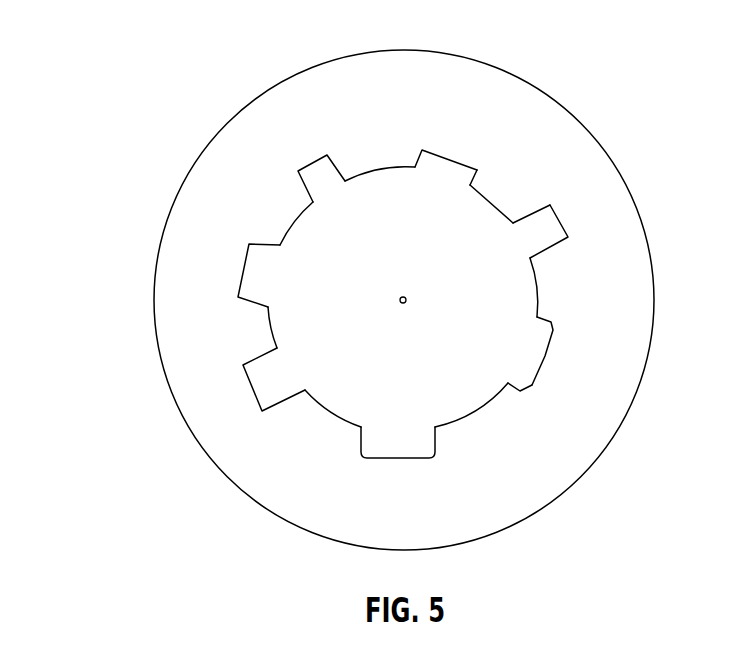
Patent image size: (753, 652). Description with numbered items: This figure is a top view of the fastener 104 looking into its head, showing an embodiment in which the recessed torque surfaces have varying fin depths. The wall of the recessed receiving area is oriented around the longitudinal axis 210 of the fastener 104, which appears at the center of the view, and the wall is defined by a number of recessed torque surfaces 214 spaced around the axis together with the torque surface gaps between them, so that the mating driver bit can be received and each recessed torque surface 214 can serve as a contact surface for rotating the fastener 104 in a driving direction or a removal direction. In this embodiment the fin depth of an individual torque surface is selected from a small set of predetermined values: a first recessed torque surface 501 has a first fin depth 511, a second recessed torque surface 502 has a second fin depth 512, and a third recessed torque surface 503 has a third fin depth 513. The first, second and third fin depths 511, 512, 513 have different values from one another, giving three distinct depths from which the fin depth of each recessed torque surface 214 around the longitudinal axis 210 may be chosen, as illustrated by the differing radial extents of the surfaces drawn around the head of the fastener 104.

The fastener 104 is at (131, 65).
The longitudinal axis 210 is at (399, 297).
The recessed torque surface 214 is at (313, 175).
The first recessed torque surface 501 is at (462, 141).
The second recessed torque surface 502 is at (572, 202).
The third recessed torque surface 503 is at (551, 392).
The first fin depth 511 is at (482, 168).
The second fin depth 512 is at (533, 203).
The third fin depth 513 is at (512, 396).